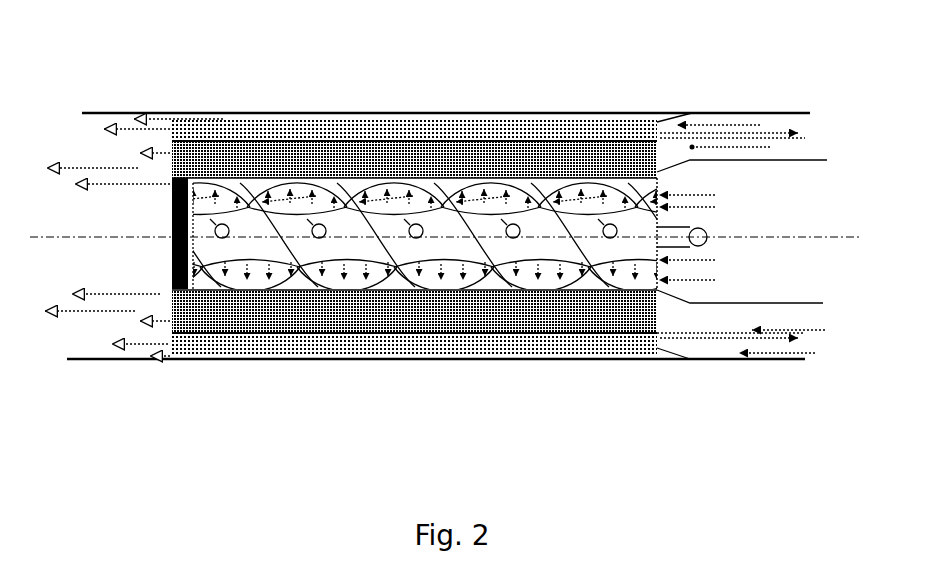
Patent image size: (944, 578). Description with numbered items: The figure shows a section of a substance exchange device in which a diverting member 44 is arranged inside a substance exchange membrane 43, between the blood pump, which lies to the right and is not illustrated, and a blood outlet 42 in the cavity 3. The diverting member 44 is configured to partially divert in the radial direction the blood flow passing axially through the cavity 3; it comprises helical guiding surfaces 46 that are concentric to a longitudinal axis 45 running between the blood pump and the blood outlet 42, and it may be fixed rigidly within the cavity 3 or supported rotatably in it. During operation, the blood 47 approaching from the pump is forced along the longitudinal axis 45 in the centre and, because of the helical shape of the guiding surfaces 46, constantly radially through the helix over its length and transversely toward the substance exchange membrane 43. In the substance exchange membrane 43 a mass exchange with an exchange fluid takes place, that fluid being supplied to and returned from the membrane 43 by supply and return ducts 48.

The cavity 3 is at (295, 277).
The blood outlet 42 is at (162, 228).
The substance exchange membrane 43 is at (280, 131).
The diverting member 44 is at (520, 192).
The longitudinal axis 45 is at (743, 237).
The helical guiding surfaces 46 is at (405, 192).
The blood 47 is at (702, 280).
The supply and return ducts 48 is at (818, 338).